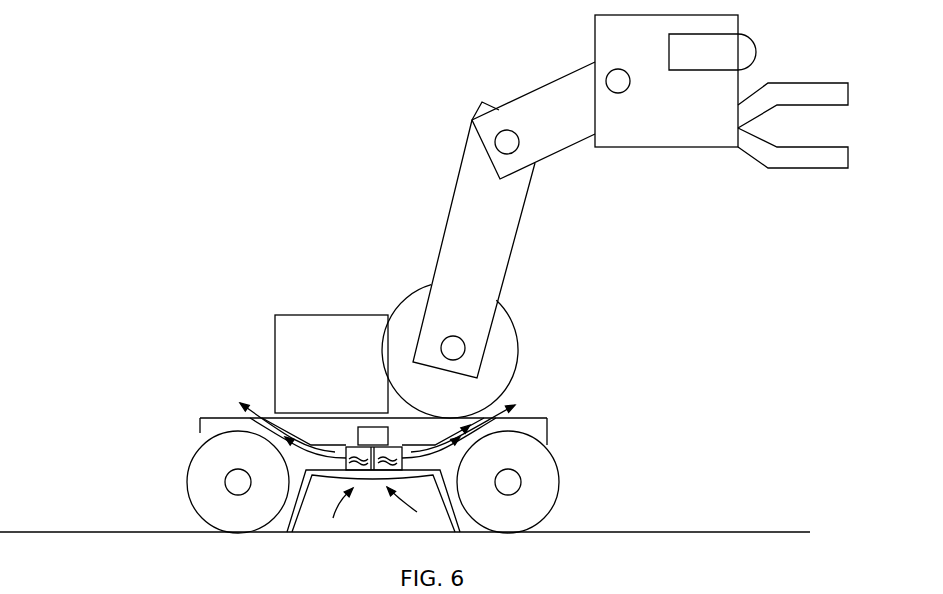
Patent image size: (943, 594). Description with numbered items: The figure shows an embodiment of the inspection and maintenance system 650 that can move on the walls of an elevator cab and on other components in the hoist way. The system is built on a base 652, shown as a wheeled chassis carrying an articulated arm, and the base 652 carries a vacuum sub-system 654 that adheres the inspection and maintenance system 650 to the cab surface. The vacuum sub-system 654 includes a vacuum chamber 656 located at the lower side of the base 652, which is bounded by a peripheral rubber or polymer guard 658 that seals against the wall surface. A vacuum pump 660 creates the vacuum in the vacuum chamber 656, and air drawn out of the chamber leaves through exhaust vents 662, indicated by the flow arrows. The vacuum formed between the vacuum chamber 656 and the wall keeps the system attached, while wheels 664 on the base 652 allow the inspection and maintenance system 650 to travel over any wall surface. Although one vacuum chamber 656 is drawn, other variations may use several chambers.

The inspection and maintenance system 650 is at (245, 93).
The base 652 is at (203, 417).
The vacuum sub-system 654 is at (297, 390).
The vacuum chamber 656 is at (420, 500).
The peripheral rubber or polymer guard 658 is at (297, 508).
The vacuum pump 660 is at (372, 432).
The exhaust vents 662 is at (478, 421).
The wheels 664 is at (207, 468).